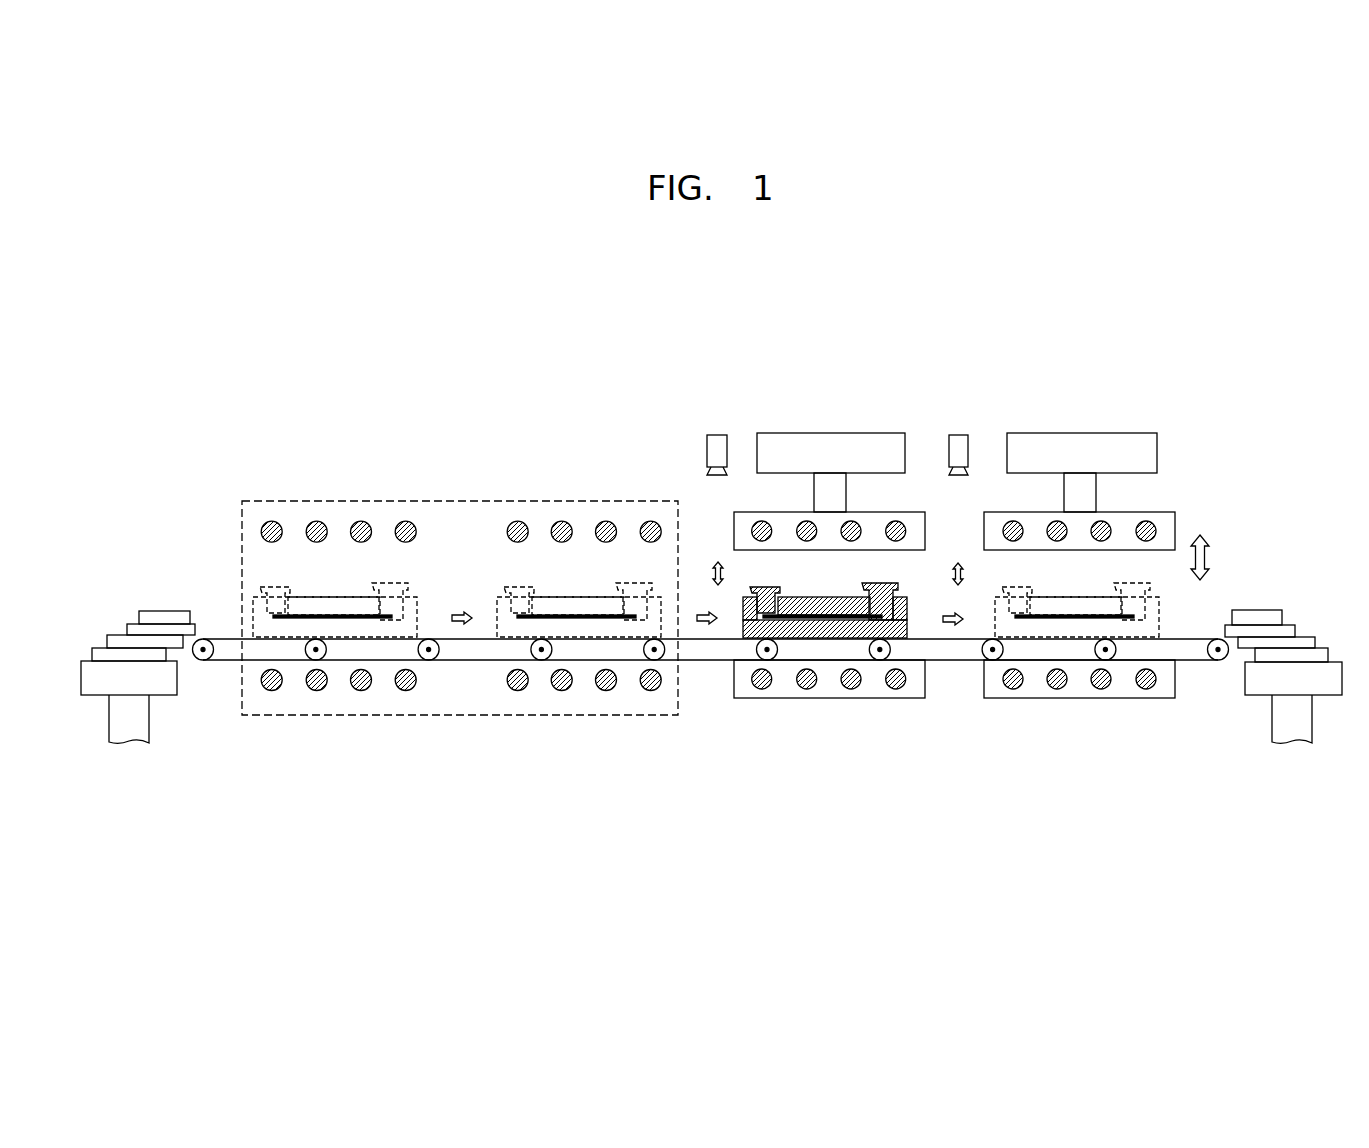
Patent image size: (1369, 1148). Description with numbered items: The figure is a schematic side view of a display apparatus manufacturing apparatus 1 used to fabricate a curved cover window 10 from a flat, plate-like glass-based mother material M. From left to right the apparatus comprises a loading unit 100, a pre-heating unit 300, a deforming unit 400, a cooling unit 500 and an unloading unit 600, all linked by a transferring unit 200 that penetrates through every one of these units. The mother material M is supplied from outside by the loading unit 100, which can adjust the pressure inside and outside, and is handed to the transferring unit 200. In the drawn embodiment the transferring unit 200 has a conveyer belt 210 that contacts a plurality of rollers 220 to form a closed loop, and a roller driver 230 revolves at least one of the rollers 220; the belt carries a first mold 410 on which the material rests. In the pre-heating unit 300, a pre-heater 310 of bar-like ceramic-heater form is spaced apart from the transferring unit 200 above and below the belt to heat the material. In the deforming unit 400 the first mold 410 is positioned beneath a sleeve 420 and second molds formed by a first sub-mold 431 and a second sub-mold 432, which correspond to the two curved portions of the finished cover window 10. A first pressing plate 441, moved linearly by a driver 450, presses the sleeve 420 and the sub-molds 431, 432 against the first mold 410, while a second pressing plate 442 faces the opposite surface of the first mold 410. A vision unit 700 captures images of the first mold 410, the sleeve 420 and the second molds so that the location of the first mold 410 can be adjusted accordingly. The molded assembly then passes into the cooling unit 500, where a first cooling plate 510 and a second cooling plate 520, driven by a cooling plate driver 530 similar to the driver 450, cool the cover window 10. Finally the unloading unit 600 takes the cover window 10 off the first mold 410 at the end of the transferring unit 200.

The display apparatus manufacturing apparatus 1 is at (402, 330).
The cover window 10 is at (1080, 616).
The mother material M is at (330, 616).
The loading unit 100 is at (106, 618).
The transferring unit 200 is at (275, 773).
The conveyer belt 210 is at (252, 663).
The rollers 220 is at (204, 662).
The roller driver 230 is at (198, 660).
The pre-heating unit 300 is at (286, 486).
The pre-heater 310 is at (363, 510).
The deforming unit 400 is at (842, 726).
The first mold 410 is at (907, 632).
The sleeve 420 is at (743, 612).
The first sub-mold 431 is at (792, 577).
The second sub-mold 432 is at (898, 585).
The first pressing plate 441 is at (724, 511).
The second pressing plate 442 is at (900, 705).
The driver 450 is at (830, 434).
The cooling unit 500 is at (1084, 736).
The first cooling plate 510 is at (1150, 706).
The second cooling plate 520 is at (1191, 507).
The cooling plate driver 530 is at (1078, 436).
The unloading unit 600 is at (1310, 615).
The vision unit 700 is at (958, 434).